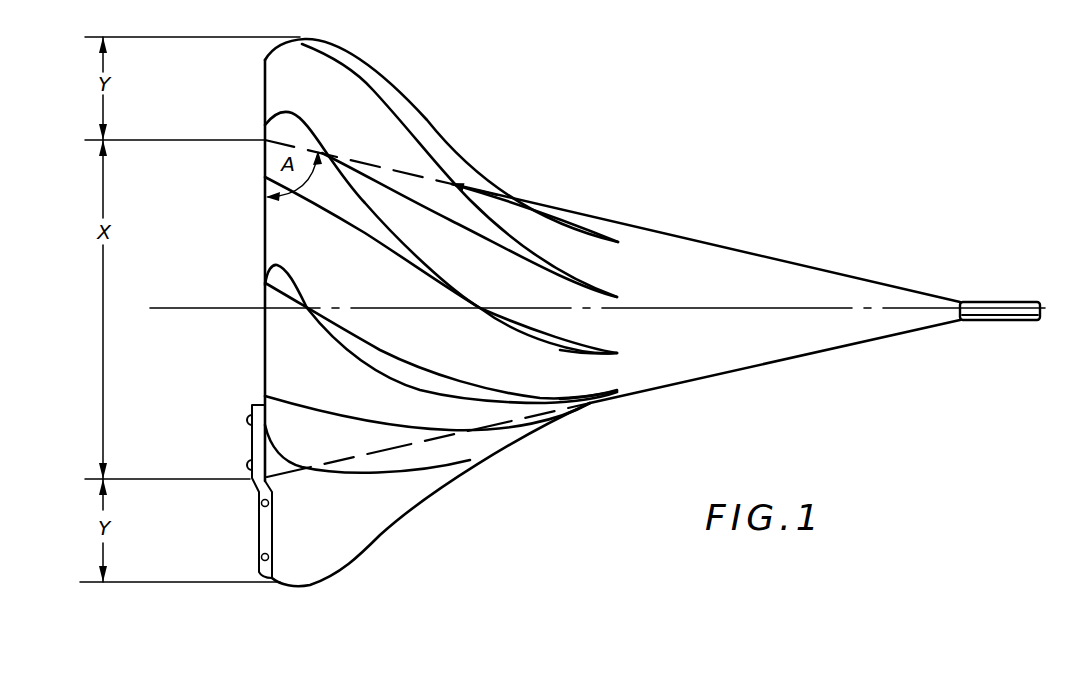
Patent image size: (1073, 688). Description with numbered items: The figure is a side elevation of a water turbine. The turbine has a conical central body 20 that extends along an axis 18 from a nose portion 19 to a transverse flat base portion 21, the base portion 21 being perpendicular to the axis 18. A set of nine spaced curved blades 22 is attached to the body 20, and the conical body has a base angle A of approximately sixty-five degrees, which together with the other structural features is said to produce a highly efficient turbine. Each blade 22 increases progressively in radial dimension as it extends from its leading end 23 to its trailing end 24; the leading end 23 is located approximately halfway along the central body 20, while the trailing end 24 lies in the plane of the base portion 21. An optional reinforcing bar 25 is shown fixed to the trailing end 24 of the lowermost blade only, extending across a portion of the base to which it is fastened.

The axis 18 is at (1000, 303).
The nose portion 19 is at (935, 292).
The conical central body 20 is at (678, 250).
The transverse flat base portion 21 is at (265, 231).
The curved blade 22 is at (423, 131).
The leading end 23 is at (607, 236).
The trailing end 24 is at (265, 156).
The reinforcing bar 25 is at (263, 527).